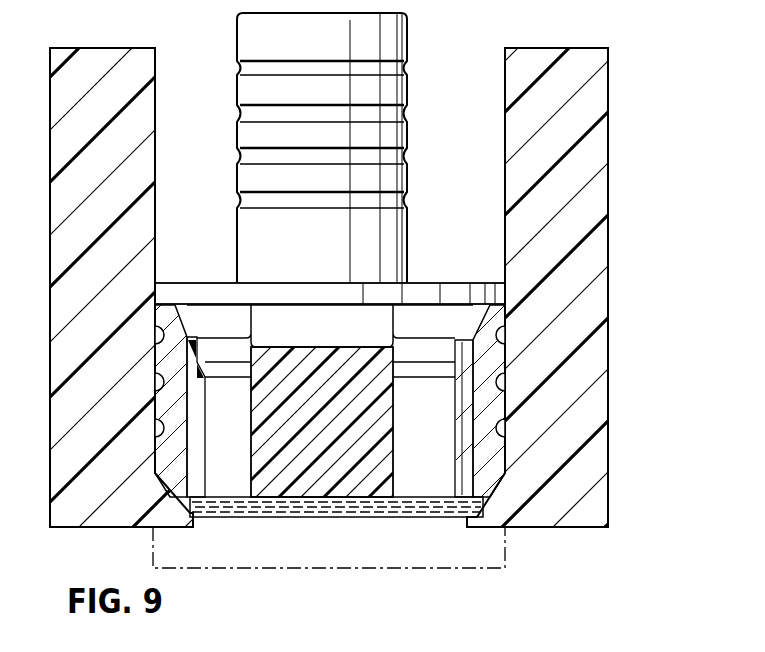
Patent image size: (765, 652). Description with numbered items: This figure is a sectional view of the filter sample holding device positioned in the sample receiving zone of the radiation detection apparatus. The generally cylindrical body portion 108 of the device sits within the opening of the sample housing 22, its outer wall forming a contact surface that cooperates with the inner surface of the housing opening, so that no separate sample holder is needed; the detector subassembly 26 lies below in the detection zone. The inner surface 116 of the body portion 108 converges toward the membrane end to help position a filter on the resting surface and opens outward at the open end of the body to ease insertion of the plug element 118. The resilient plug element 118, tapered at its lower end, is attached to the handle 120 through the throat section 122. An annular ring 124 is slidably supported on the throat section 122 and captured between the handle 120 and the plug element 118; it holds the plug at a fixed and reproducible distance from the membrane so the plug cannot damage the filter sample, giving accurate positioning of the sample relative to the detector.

The sample housing 22 is at (597, 420).
The detector subassembly 26 is at (505, 553).
The body portion 108 is at (500, 345).
The inner surface 116 is at (470, 400).
The plug element 118 is at (472, 446).
The handle 120 is at (408, 46).
The throat section 122 is at (393, 315).
The annular ring 124 is at (458, 293).